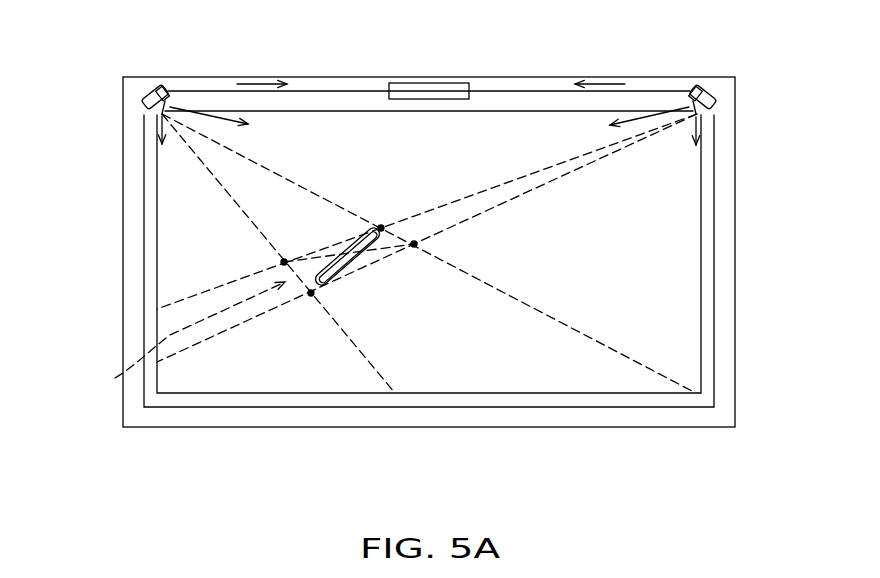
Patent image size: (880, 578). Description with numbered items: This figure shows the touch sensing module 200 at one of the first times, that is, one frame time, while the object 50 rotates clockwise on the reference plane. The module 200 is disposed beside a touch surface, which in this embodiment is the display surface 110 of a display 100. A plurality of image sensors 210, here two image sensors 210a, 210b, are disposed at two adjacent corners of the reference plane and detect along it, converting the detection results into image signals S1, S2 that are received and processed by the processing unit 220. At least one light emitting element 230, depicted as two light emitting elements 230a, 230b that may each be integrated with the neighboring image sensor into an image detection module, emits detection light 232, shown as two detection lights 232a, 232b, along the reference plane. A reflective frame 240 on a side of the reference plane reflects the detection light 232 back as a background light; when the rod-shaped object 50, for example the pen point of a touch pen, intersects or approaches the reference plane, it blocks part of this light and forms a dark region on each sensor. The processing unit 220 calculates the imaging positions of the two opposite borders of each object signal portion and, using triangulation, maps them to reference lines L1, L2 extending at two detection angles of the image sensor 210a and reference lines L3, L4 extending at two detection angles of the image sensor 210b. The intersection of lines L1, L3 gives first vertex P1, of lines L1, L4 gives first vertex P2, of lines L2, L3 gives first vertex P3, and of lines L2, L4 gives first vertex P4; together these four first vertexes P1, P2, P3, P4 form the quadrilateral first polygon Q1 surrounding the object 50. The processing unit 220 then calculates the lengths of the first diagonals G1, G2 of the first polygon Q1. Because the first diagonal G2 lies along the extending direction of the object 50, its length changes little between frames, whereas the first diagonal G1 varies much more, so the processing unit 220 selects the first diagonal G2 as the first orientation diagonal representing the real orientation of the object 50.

The touch sensing module 200 is at (724, 56).
The display 100 is at (723, 378).
The display surface 110 is at (664, 310).
The reflective frame 240 is at (182, 400).
The processing unit 220 is at (413, 92).
The image sensors 210 is at (435, 75).
The image sensor 210a is at (143, 104).
The image sensor 210b is at (711, 114).
The light emitting element 230 is at (435, 75).
The light emitting element 230a is at (177, 90).
The light emitting element 230b is at (688, 93).
The detection light 232 is at (437, 169).
The detection light 232a is at (168, 118).
The detection light 232b is at (633, 120).
The object 50 is at (358, 266).
The image signal S1 is at (260, 59).
The image signal S2 is at (595, 59).
The reference line L1 is at (245, 216).
The reference line L2 is at (658, 370).
The reference line L3 is at (508, 167).
The reference line L4 is at (590, 176).
The first vertex P1 is at (284, 262).
The first vertex P2 is at (311, 296).
The first vertex P3 is at (381, 228).
The first vertex P4 is at (414, 248).
The first polygon Q1 is at (169, 339).
The first diagonal G1 is at (311, 296).
The first diagonal G2 is at (343, 265).